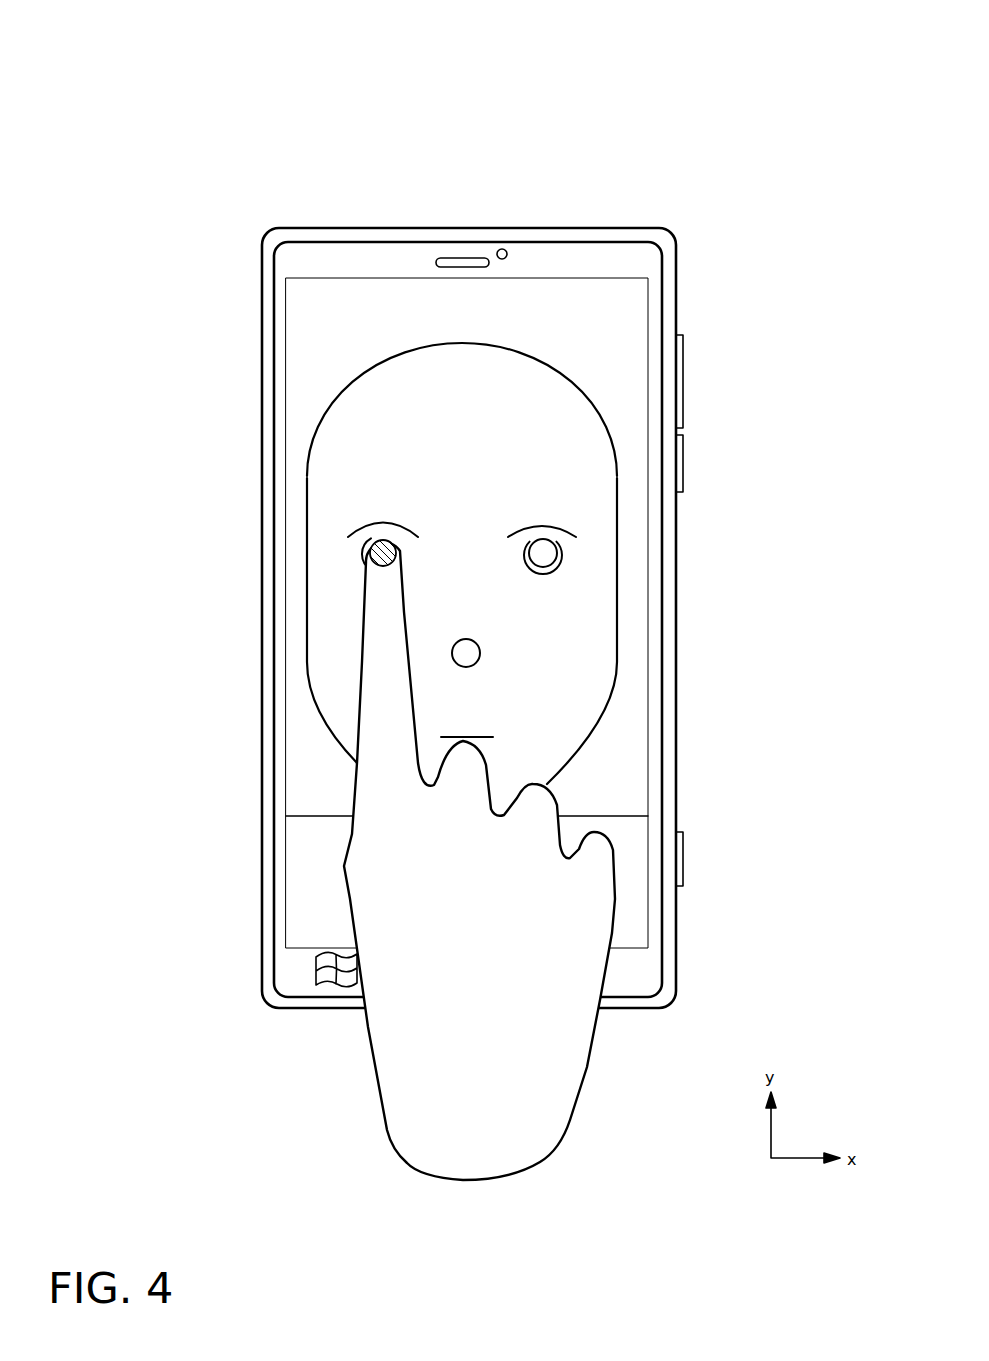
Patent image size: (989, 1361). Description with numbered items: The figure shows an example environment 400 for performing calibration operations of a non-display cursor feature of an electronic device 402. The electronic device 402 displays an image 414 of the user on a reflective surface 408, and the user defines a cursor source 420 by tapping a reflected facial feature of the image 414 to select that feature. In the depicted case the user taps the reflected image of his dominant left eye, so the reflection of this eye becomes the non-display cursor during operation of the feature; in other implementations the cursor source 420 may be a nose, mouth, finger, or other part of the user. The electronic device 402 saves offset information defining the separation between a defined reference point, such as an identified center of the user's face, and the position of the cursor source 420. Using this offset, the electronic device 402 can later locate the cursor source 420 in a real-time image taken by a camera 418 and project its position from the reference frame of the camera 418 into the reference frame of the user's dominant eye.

The example environment 400 is at (116, 61).
The electronic device 402 is at (658, 528).
The reflective surface 408 is at (613, 350).
The image of the user 414 is at (357, 387).
The camera 418 is at (498, 248).
The cursor source 420 is at (367, 537).